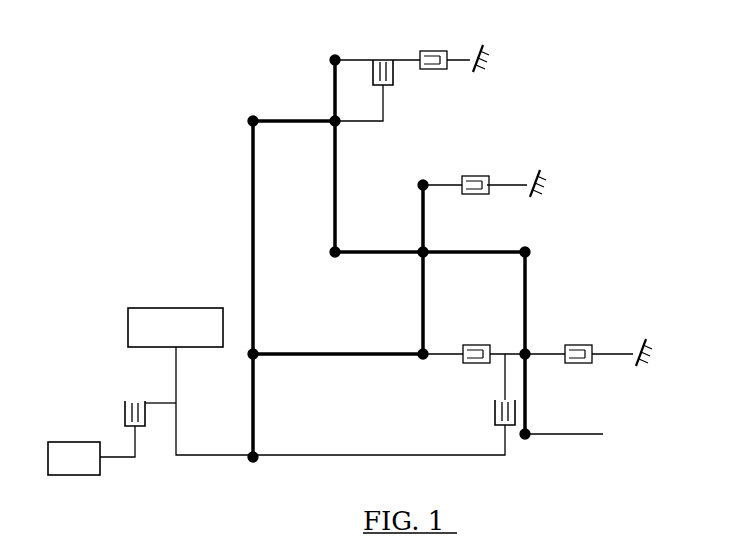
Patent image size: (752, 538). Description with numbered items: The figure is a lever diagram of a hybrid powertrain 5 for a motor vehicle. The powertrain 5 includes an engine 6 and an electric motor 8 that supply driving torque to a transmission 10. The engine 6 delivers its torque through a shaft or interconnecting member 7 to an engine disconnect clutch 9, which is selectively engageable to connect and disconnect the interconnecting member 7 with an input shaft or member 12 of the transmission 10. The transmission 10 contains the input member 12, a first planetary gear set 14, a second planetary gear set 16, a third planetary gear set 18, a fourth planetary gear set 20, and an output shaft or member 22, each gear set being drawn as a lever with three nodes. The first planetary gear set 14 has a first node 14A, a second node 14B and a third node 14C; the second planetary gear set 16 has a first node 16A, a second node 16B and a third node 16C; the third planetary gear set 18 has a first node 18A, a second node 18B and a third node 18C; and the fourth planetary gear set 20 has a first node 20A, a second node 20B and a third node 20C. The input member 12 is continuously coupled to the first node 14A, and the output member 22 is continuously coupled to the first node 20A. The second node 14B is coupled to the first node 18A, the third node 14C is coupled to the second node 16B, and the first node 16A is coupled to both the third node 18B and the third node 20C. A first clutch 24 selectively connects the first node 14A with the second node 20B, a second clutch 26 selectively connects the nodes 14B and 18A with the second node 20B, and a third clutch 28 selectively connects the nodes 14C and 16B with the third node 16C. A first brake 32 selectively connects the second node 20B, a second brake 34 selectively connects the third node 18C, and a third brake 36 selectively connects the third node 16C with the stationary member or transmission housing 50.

The powertrain 5 is at (605, 66).
The engine 6 is at (74, 458).
The shaft or interconnecting member 7 is at (122, 459).
The electric motor 8 is at (176, 307).
The engine disconnect clutch 9 is at (124, 409).
The transmission 10 is at (528, 90).
The input shaft or member 12 is at (197, 458).
The first planetary gear set 14 is at (270, 114).
The first node of the first planetary gear set 14A is at (253, 462).
The second node of the first planetary gear set 14B is at (249, 355).
The third node of the first planetary gear set 14C is at (251, 116).
The second planetary gear set 16 is at (356, 54).
The first node of the second planetary gear set 16A is at (330, 252).
The second node of the second planetary gear set 16B is at (331, 126).
The third node of the second planetary gear set 16C is at (333, 56).
The third planetary gear set 18 is at (443, 176).
The first node of the third planetary gear set 18A is at (421, 360).
The third node of the third planetary gear set 18B is at (420, 257).
The third node of the third planetary gear set 18C is at (422, 180).
The fourth planetary gear set 20 is at (513, 271).
The first node of the fourth planetary gear set 20A is at (523, 440).
The second node of the fourth planetary gear set 20B is at (521, 350).
The third node of the fourth planetary gear set 20C is at (530, 252).
The output shaft or member 22 is at (580, 438).
The first clutch 24 is at (495, 410).
The second clutch 26 is at (470, 364).
The third clutch 28 is at (394, 72).
The first brake 32 is at (580, 344).
The second brake 34 is at (470, 194).
The third brake 36 is at (437, 50).
The stationary member or transmission housing 50 is at (479, 47).